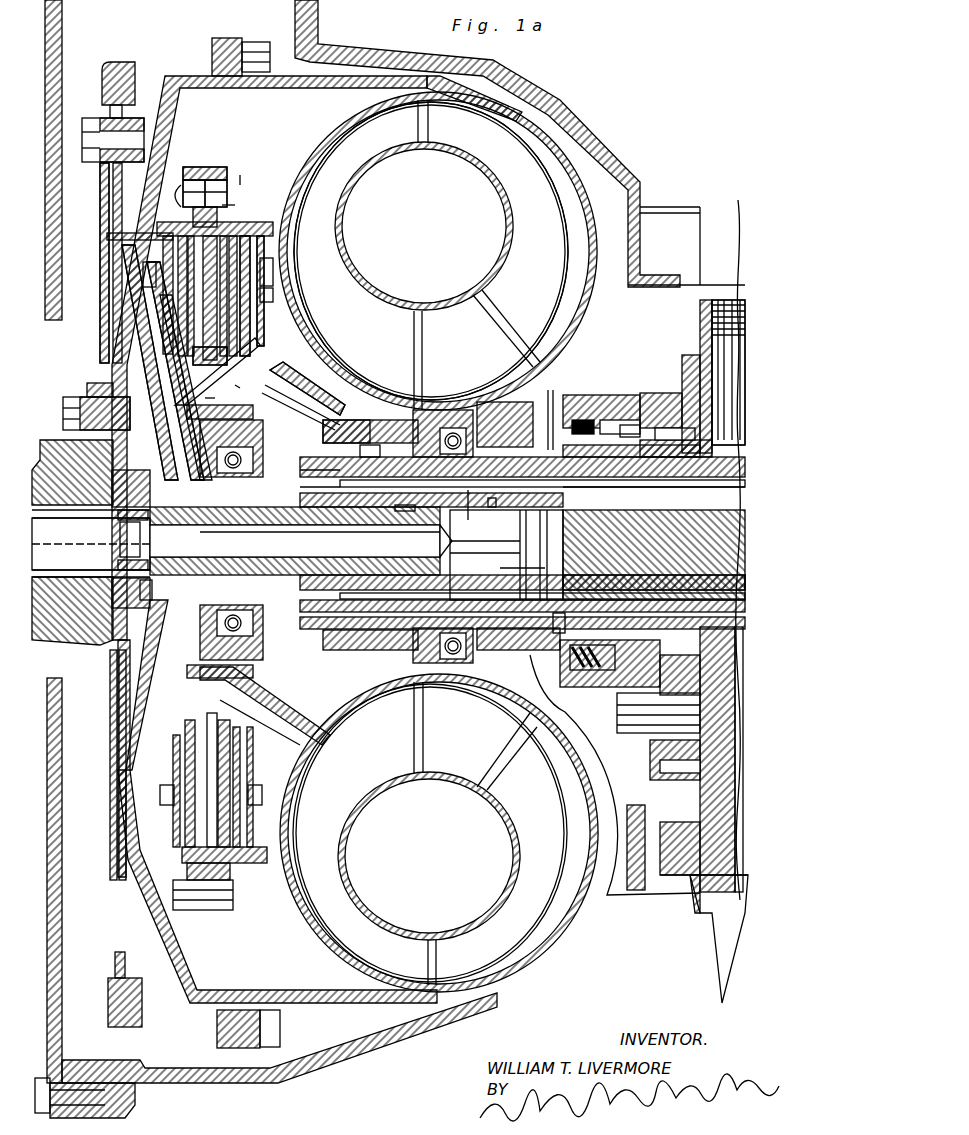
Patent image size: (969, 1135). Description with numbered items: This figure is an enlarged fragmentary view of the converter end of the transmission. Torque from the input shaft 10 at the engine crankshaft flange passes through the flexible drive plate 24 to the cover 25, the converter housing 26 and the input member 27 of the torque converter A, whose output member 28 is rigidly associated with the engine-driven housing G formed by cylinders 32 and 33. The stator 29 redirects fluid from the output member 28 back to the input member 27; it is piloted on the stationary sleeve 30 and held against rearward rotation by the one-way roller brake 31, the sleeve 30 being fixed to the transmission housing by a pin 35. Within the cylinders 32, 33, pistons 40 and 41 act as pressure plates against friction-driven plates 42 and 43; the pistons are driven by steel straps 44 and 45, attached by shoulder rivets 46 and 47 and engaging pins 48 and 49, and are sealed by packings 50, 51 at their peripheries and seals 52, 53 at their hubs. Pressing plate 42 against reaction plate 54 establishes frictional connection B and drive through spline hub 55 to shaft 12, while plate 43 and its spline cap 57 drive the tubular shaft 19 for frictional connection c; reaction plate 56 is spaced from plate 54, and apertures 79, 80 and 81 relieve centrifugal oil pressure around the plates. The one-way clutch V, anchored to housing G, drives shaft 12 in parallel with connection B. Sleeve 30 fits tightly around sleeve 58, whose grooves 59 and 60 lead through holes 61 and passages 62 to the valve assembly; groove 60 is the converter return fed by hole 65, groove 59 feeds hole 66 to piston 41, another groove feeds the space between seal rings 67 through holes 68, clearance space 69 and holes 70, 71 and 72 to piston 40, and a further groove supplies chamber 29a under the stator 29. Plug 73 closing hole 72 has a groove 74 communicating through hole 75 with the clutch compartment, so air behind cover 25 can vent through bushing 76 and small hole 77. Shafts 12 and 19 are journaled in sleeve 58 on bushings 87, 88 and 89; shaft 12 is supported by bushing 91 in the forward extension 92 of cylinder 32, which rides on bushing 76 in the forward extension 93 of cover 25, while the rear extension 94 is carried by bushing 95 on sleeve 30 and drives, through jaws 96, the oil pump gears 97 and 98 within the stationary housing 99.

The input shaft 10 is at (45, 496).
The shaft 12 is at (494, 555).
The tubular shaft 19 is at (728, 506).
The drive plate 24 is at (103, 270).
The cover 25 is at (175, 78).
The converter housing 26 is at (306, 80).
The input member 27 is at (546, 274).
The output member 28 is at (320, 226).
The stator 29 is at (485, 369).
The chamber 29a is at (512, 365).
The stationary sleeve 30 is at (540, 467).
The one-way roller brake 31 is at (455, 440).
The cylinder 32 is at (168, 226).
The cylinder 33 is at (246, 234).
The pin 35 is at (720, 342).
The piston 40 is at (170, 310).
The piston 41 is at (282, 373).
The friction-driven plate 42 is at (185, 325).
The friction-driven plate 43 is at (240, 336).
The steel strap 44 is at (160, 290).
The steel strap 45 is at (273, 296).
The shoulder rivet 46 is at (143, 276).
The shoulder rivet 47 is at (273, 272).
The pin 48 is at (160, 795).
The pin 49 is at (262, 795).
The packing 50 is at (175, 237).
The packing 51 is at (262, 228).
The piston ring 52 is at (232, 420).
The piston ring 53 is at (345, 445).
The reaction plate 54 is at (198, 185).
The spline hub 55 is at (320, 487).
The reaction plate 56 is at (215, 185).
The spline cap 57 is at (320, 470).
The sleeve 58 is at (537, 577).
The groove 59 is at (646, 482).
The groove 60 is at (558, 620).
The hole 61 is at (727, 600).
The passage 62 is at (737, 690).
The hole 65 is at (377, 604).
The hole 66 is at (372, 456).
The seal rings 67 is at (468, 518).
The holes 68 is at (492, 507).
The clearance space 69 is at (500, 568).
The hole 70 is at (438, 540).
The hole 71 is at (322, 552).
The hole 72 is at (198, 542).
The plug 73 is at (125, 545).
The groove 74 is at (125, 565).
The hole 75 is at (238, 615).
The bushing 76 is at (125, 516).
The small hole 77 is at (130, 538).
The aperture 79 is at (200, 358).
The aperture 80 is at (178, 190).
The apertures 81 is at (232, 203).
The bushing 87 is at (402, 510).
The bushing 88 is at (728, 487).
The bushing 89 is at (366, 533).
The bushing 91 is at (148, 590).
The forward extension 92 is at (115, 590).
The forward extension 93 is at (110, 500).
The rear extension 94 is at (595, 657).
The bushing 95 is at (588, 430).
The jaws 96 is at (620, 438).
The external gear 97 is at (660, 760).
The external gear 98 is at (690, 400).
The stationary housing 99 is at (620, 688).
The torque converter A is at (455, 202).
The frictional connection B is at (205, 392).
The engine-driven housing G is at (241, 168).
The one-way clutch V is at (251, 713).
The frictional connection c is at (233, 378).